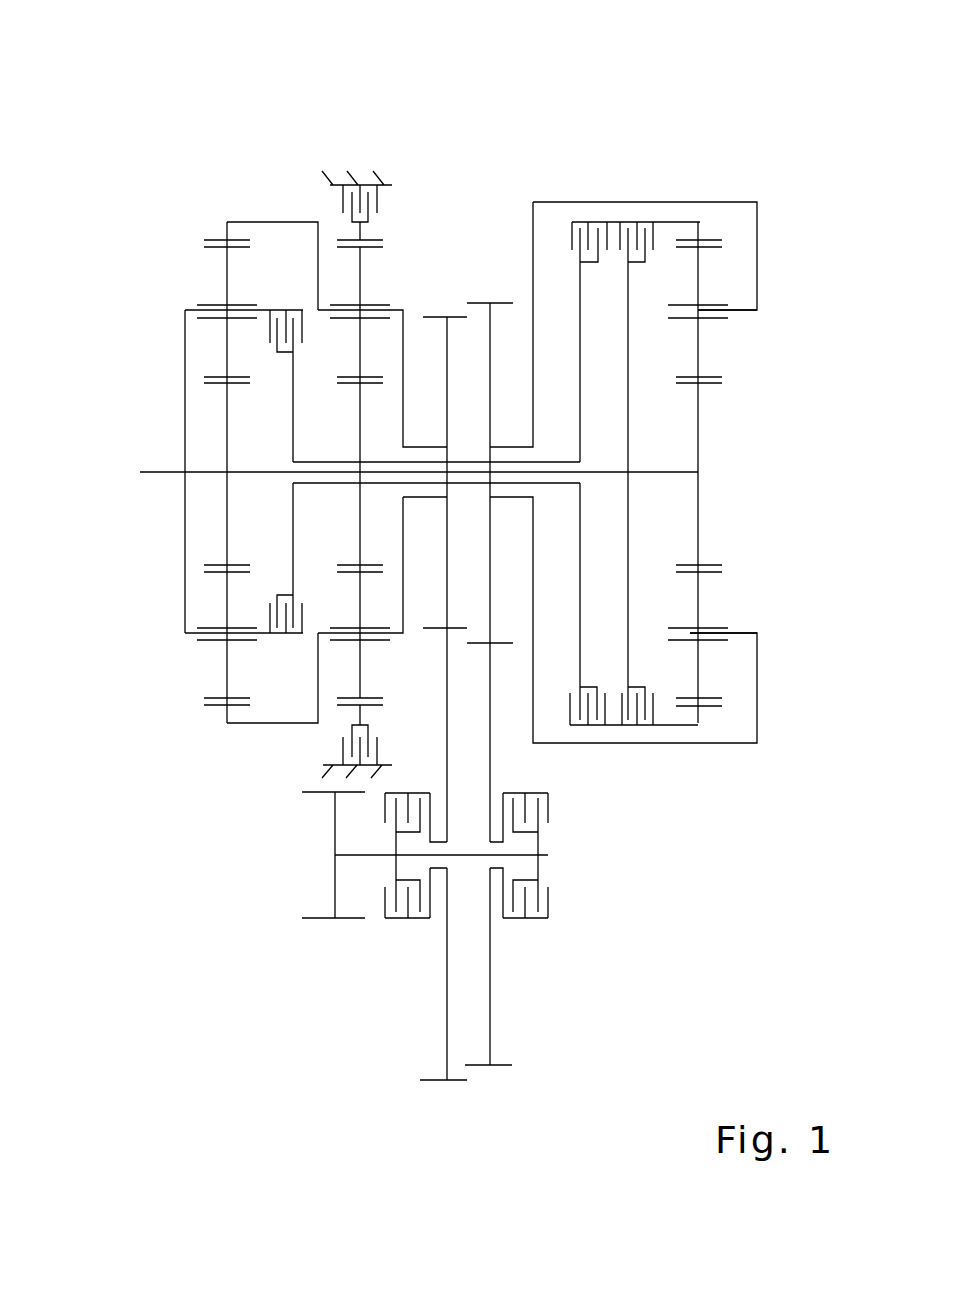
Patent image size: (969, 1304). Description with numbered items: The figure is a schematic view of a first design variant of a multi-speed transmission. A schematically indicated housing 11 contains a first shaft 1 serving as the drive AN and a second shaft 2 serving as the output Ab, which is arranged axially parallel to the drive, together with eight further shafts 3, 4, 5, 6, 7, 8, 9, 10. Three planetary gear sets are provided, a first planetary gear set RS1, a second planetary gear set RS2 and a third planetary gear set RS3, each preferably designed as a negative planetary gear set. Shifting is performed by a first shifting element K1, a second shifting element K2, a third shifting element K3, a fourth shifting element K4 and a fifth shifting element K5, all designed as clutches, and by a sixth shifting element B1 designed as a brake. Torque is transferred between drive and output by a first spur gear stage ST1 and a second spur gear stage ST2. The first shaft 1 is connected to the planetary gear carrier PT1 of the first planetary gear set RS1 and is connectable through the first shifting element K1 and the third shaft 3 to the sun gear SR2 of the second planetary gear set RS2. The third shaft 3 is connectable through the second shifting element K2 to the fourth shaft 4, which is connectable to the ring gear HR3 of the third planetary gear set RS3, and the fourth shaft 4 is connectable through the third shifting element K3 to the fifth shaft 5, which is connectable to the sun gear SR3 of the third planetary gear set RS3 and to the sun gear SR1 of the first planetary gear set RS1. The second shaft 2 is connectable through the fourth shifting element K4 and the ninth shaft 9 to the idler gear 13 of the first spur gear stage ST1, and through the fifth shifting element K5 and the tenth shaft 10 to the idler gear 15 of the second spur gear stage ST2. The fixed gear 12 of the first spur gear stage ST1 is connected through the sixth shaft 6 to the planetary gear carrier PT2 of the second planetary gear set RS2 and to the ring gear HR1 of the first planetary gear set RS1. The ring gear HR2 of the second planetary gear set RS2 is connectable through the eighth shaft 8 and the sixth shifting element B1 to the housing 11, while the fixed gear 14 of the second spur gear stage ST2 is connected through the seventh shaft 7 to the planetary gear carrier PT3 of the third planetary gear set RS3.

The first shaft 1 is at (182, 475).
The second shaft 2 is at (335, 857).
The third shaft 3 is at (290, 443).
The fourth shaft 4 is at (690, 222).
The fifth shaft 5 is at (515, 452).
The sixth shaft 6 is at (237, 218).
The seventh shaft 7 is at (470, 482).
The eighth shaft 8 is at (345, 237).
The ninth shaft 9 is at (433, 925).
The tenth shaft 10 is at (497, 925).
The housing 11 is at (348, 205).
The fixed gear 12 is at (440, 632).
The idler gear 13 is at (442, 1083).
The fixed gear 14 is at (467, 643).
The idler gear 15 is at (470, 1070).
The drive AN is at (140, 473).
The output Ab is at (333, 893).
The first planetary gear set RS1 is at (227, 190).
The second planetary gear set RS2 is at (360, 160).
The third planetary gear set RS3 is at (698, 200).
The first spur gear stage ST1 is at (447, 300).
The second spur gear stage ST2 is at (490, 297).
The ring gear HR1 is at (228, 235).
The ring gear HR2 is at (386, 238).
The ring gear HR3 is at (705, 228).
The sun gear SR1 is at (228, 402).
The sun gear SR2 is at (362, 422).
The sun gear SR3 is at (703, 427).
The planetary gear carrier PT1 is at (191, 304).
The planetary gear carrier PT2 is at (347, 321).
The planetary gear carrier PT3 is at (728, 320).
The first shifting element K1 is at (276, 306).
The second shifting element K2 is at (585, 202).
The third shifting element K3 is at (640, 202).
The fourth shifting element K4 is at (388, 924).
The fifth shifting element K5 is at (539, 922).
The sixth shifting element B1 is at (392, 205).